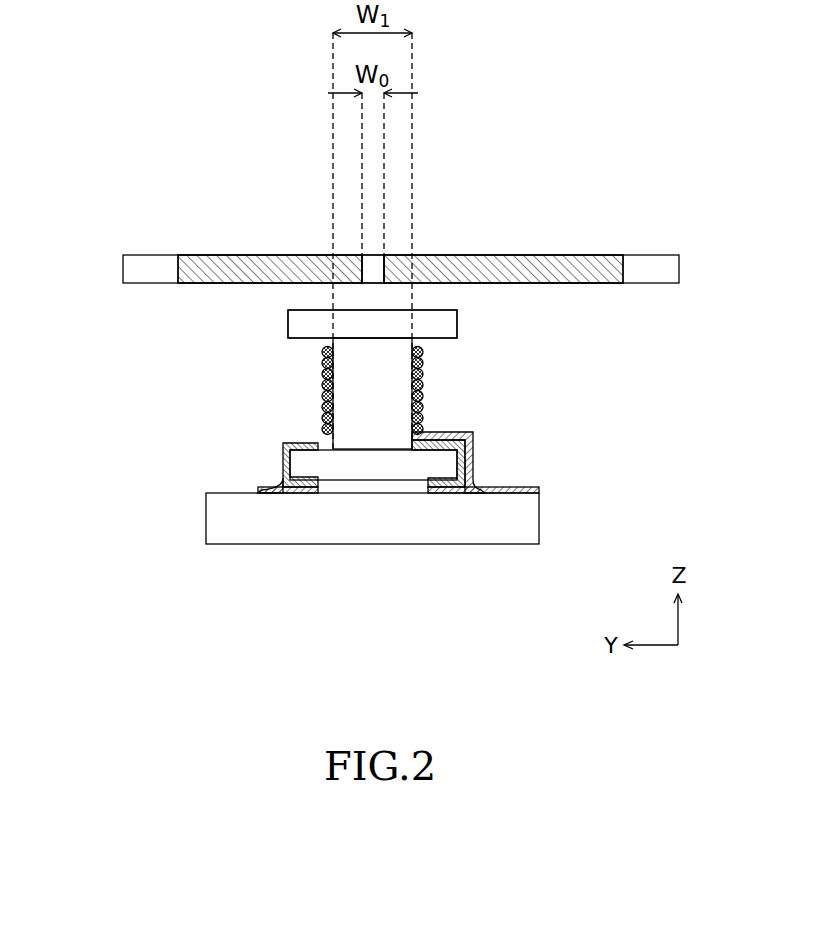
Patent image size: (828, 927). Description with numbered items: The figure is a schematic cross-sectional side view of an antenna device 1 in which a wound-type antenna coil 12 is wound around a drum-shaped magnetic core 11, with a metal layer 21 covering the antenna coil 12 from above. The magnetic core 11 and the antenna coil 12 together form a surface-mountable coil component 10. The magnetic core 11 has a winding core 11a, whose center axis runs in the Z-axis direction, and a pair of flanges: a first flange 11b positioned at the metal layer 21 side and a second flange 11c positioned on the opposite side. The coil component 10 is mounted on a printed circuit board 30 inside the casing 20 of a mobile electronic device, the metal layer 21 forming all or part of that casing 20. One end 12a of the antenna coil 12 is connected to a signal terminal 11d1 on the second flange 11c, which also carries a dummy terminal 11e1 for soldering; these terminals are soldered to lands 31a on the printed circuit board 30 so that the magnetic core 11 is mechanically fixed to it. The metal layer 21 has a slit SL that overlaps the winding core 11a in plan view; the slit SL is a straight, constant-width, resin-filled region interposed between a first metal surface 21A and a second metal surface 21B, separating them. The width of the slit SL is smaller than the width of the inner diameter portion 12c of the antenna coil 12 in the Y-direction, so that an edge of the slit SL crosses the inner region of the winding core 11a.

The antenna device 1 is at (503, 103).
The coil component 10 is at (548, 328).
The magnetic core 11 is at (462, 326).
The winding core 11a is at (357, 405).
The first flange 11b is at (288, 325).
The second flange 11c is at (298, 466).
The signal terminal 11d1 is at (474, 453).
The dummy terminal 11e1 is at (283, 446).
The antenna coil 12 is at (428, 398).
The one end of the antenna coil 12a is at (474, 437).
The inner diameter portion 12c is at (362, 372).
The casing 20 is at (126, 270).
The metal layer 21 is at (400, 233).
The first metal surface 21A is at (178, 229).
The second metal surface 21B is at (623, 229).
The slit SL is at (372, 253).
The printed circuit board 30 is at (206, 515).
The land 31a is at (290, 494).